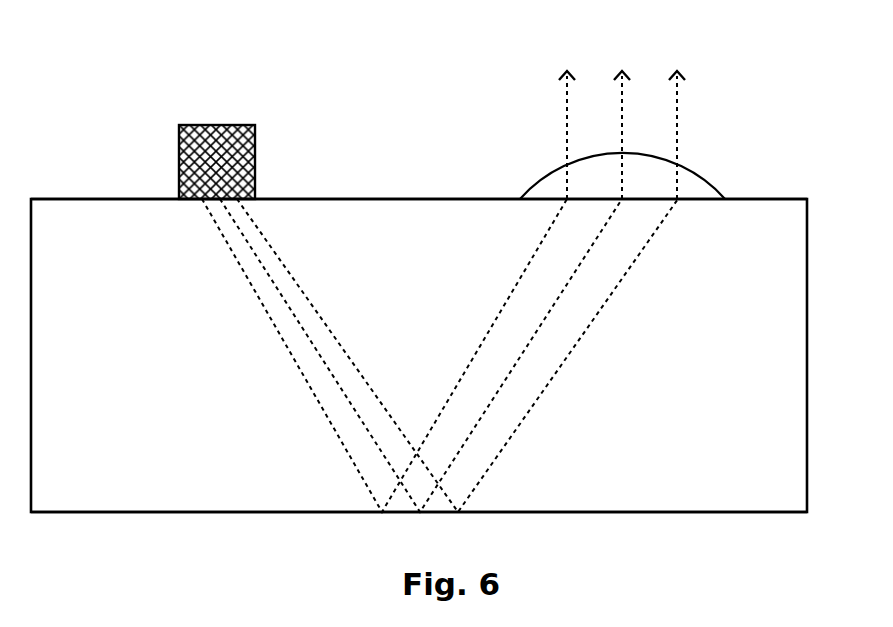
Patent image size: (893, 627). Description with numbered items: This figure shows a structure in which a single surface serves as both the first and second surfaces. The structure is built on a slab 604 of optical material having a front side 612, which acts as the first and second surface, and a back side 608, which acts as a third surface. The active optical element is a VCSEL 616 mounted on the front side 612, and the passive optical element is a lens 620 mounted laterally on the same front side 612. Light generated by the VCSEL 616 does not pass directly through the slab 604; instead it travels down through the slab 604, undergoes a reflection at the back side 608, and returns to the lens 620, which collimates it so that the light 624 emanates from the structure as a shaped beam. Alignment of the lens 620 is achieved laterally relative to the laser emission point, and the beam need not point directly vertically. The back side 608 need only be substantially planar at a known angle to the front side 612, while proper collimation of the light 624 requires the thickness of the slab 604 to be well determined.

The slab 604 is at (129, 470).
The back side 608 is at (181, 513).
The front side 612 is at (125, 198).
The VCSEL 616 is at (256, 152).
The lens 620 is at (547, 168).
The light 624 is at (705, 59).